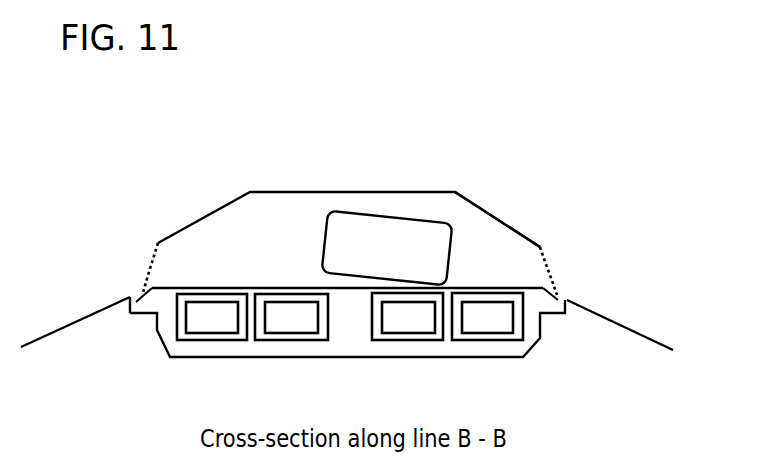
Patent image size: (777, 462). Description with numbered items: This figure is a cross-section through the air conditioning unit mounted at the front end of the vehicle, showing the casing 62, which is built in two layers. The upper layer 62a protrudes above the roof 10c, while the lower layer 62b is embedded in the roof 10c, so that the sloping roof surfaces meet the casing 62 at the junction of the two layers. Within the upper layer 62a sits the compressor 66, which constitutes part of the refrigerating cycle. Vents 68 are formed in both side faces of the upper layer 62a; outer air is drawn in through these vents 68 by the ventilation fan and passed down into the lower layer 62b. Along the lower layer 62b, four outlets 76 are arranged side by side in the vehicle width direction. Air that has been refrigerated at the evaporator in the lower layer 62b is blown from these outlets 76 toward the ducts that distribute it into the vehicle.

The roof 10c is at (631, 322).
The casing 62 is at (470, 193).
The upper layer 62a is at (517, 228).
The lower layer 62b is at (535, 347).
The compressor 66 is at (370, 227).
The vents 68 is at (155, 252).
The outlets 76 is at (483, 323).